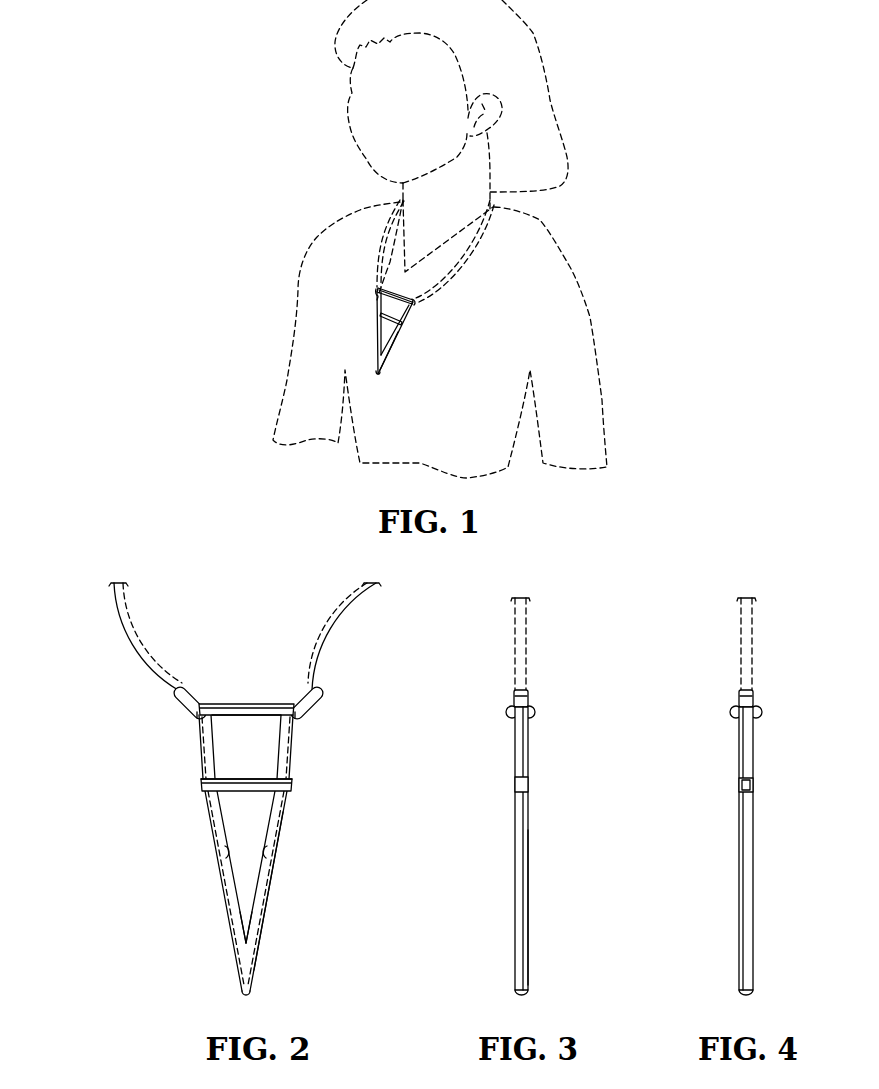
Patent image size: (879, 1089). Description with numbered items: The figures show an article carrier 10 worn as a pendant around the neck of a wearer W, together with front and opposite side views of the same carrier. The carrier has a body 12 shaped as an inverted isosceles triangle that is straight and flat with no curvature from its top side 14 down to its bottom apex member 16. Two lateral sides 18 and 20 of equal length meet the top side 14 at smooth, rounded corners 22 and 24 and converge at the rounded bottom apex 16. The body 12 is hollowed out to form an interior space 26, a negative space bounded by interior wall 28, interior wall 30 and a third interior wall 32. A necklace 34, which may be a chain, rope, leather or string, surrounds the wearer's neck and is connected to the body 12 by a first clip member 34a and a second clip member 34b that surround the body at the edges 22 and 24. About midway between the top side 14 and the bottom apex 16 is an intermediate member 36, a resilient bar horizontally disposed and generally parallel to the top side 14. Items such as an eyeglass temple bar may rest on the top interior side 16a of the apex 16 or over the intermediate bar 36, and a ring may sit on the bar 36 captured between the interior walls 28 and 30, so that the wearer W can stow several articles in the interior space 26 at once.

In FIG. 1, the wearer W is at (601, 84).
In FIG. 1, the article carrier 10 is at (370, 327).
In FIG. 2, the article carrier 10 is at (215, 835).
In FIG. 1, the body 12 is at (402, 340).
In FIG. 2, the body 12 is at (290, 805).
In FIG. 3, the body 12 is at (528, 840).
In FIG. 1, the top side 14 is at (395, 291).
In FIG. 2, the top side 14 is at (238, 704).
In FIG. 1, the bottom apex member 16 is at (380, 373).
In FIG. 2, the bottom apex member 16 is at (250, 996).
In FIG. 3, the bottom apex member 16 is at (527, 994).
In FIG. 4, the bottom apex member 16 is at (751, 994).
In FIG. 2, the top interior side of the apex 16a is at (249, 943).
In FIG. 1, the lateral side 18 is at (378, 332).
In FIG. 2, the lateral side 18 is at (200, 760).
In FIG. 4, the lateral side 18 is at (742, 845).
In FIG. 1, the lateral side 20 is at (385, 365).
In FIG. 2, the lateral side 20 is at (277, 887).
In FIG. 3, the lateral side 20 is at (526, 905).
In FIG. 1, the corner 22 is at (378, 295).
In FIG. 2, the corner 22 is at (190, 722).
In FIG. 1, the corner 24 is at (418, 305).
In FIG. 2, the corner 24 is at (302, 718).
In FIG. 2, the interior space 26 is at (233, 784).
In FIG. 2, the interior wall 28 is at (225, 851).
In FIG. 2, the interior wall 30 is at (266, 851).
In FIG. 2, the third interior wall 32 is at (225, 716).
In FIG. 1, the necklace 34 is at (463, 262).
In FIG. 2, the necklace 34 is at (346, 658).
In FIG. 3, the necklace 34 is at (522, 645).
In FIG. 4, the necklace 34 is at (750, 645).
In FIG. 2, the first clip member 34a is at (180, 700).
In FIG. 4, the first clip member 34a is at (757, 702).
In FIG. 2, the second clip member 34b is at (318, 700).
In FIG. 3, the second clip member 34b is at (530, 702).
In FIG. 2, the intermediate member 36 is at (252, 778).